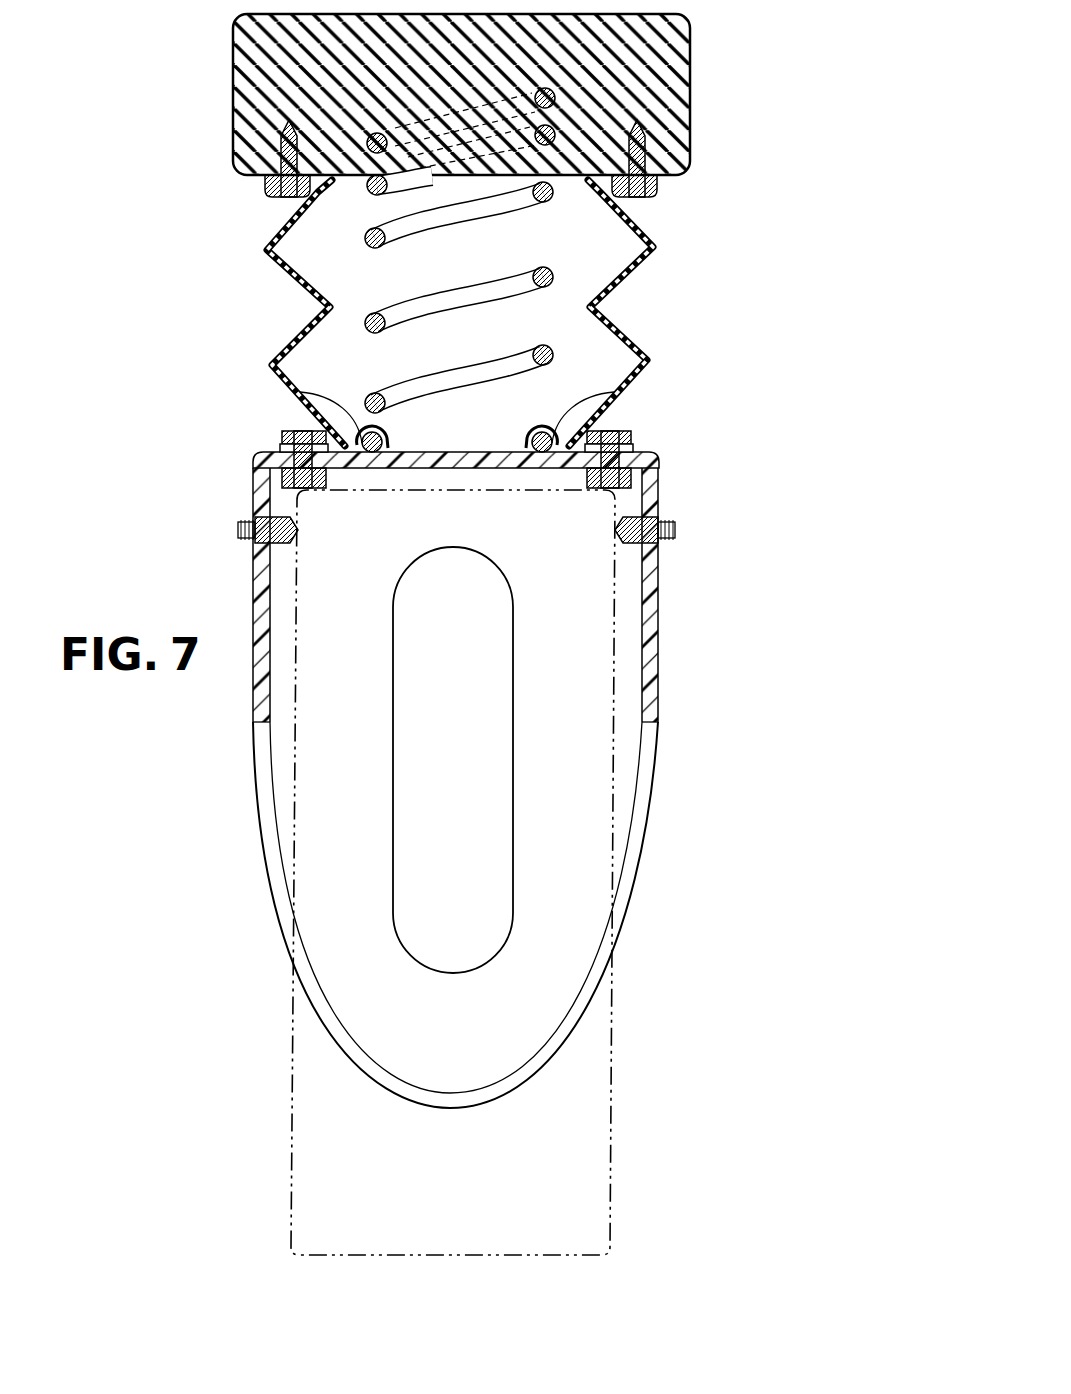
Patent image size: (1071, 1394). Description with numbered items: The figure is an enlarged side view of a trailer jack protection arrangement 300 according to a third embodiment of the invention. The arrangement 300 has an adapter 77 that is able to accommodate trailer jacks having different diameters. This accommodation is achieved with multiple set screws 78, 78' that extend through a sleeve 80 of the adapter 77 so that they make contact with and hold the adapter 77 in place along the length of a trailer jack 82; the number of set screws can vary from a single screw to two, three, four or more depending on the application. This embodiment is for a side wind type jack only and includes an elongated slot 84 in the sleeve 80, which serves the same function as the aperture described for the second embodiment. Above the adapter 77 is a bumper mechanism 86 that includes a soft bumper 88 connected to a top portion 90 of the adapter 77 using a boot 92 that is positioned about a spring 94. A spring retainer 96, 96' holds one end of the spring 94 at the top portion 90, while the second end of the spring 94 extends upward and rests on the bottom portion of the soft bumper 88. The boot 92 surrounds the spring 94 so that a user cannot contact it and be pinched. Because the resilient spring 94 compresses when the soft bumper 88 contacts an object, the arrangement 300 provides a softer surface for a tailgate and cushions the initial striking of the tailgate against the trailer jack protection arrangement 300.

The adapter 77 is at (153, 728).
The set screw 78 is at (247, 497).
The set screw 78' is at (672, 498).
The sleeve 80 is at (658, 620).
The trailer jack 82 is at (588, 1092).
The elongated slot 84 is at (513, 800).
The bumper mechanism 86 is at (733, 176).
The soft bumper 88 is at (661, 37).
The top portion 90 is at (467, 452).
The boot 92 is at (641, 258).
The spring 94 is at (552, 277).
The spring retainer 96 is at (272, 401).
The spring retainer 96' is at (659, 400).
The trailer jack protection arrangement 300 is at (175, 193).